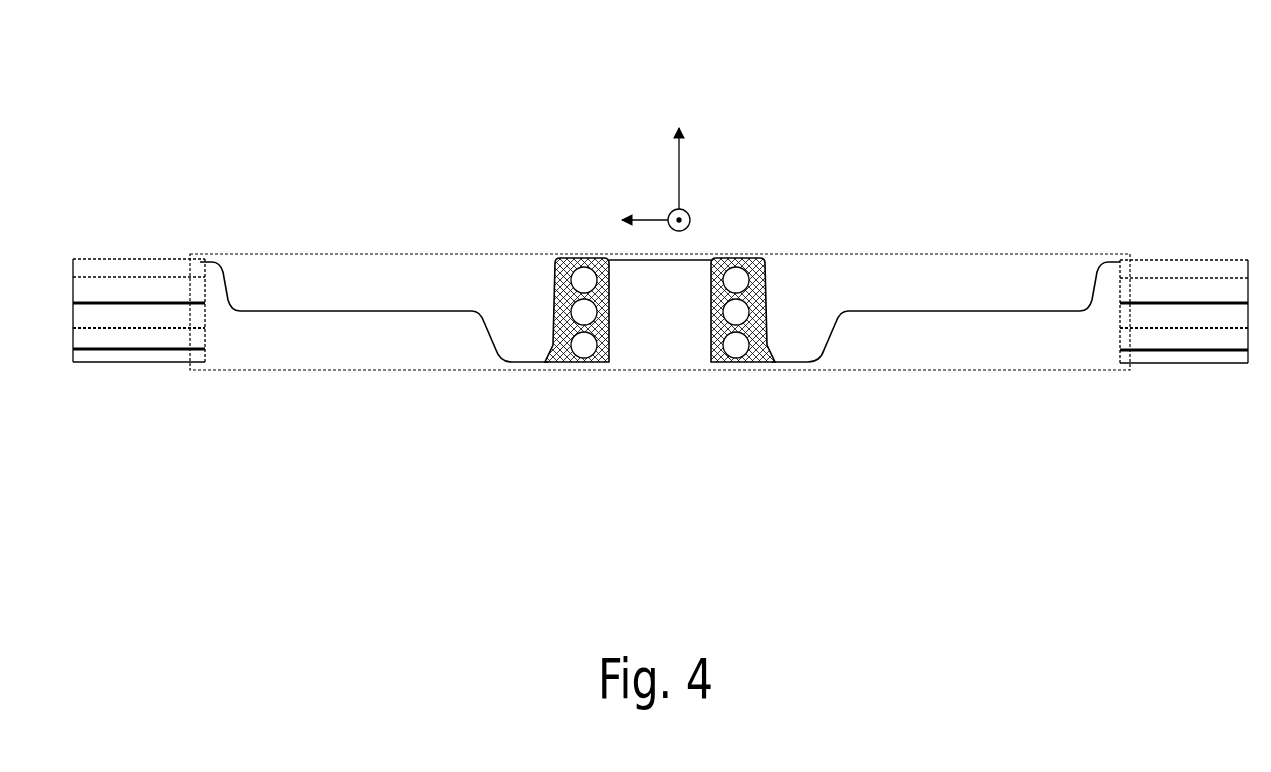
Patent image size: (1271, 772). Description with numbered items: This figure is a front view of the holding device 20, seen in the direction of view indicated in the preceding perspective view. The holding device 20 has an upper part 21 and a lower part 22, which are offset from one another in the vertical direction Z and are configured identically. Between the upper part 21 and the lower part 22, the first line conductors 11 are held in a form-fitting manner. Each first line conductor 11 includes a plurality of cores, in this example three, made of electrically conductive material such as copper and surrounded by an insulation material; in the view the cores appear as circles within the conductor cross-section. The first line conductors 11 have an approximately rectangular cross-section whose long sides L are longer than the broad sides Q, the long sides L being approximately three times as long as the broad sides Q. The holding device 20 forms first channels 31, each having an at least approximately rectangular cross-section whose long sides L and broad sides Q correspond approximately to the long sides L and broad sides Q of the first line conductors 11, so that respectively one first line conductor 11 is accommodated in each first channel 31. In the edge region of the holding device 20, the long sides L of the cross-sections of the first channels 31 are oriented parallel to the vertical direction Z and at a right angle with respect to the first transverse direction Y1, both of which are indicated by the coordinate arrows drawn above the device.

The holding device 20 is at (314, 196).
The upper part 21 is at (980, 278).
The lower part 22 is at (980, 345).
The first channels 31 is at (573, 254).
The first line conductors 11 is at (568, 362).
The long sides L is at (558, 293).
The broad sides Q is at (745, 362).
The first transverse direction Y1 is at (648, 215).
The vertical direction Z is at (680, 165).